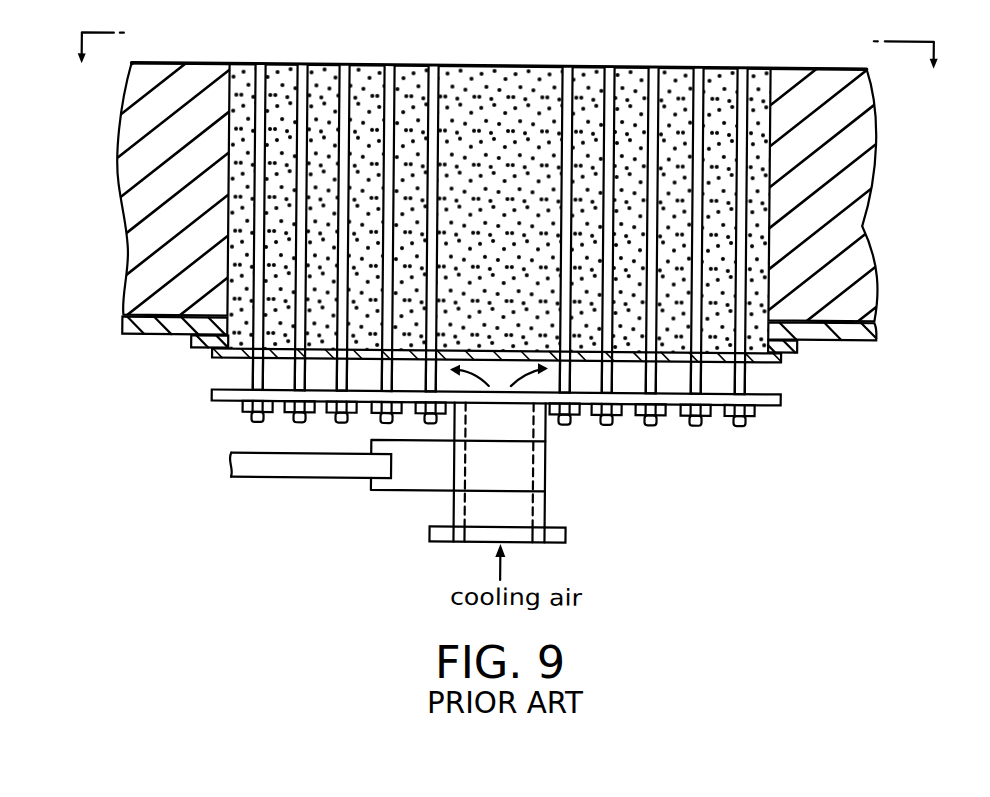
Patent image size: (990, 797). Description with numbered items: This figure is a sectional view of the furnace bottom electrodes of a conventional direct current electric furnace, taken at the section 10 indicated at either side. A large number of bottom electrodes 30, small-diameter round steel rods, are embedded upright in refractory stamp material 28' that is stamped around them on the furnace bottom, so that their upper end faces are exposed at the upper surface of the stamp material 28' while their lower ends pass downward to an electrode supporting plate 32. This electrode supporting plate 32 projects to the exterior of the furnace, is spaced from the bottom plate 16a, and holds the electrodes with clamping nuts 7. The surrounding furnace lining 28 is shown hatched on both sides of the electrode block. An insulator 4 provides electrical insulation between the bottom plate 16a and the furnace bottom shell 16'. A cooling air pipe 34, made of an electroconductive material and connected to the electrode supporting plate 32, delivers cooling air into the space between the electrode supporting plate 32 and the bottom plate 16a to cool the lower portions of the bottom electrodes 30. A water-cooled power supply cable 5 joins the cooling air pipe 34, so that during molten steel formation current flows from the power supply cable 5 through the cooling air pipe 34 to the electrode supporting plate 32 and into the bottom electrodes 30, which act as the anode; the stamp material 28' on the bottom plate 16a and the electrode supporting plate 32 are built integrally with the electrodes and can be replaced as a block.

The section line 10 is at (512, 51).
The refractory block / wall 28 is at (500, 210).
The stamp material 28' is at (658, 188).
The bottom electrodes 30 is at (397, 100).
The furnace bottom shell 16' is at (483, 388).
The insulator 4 is at (193, 350).
The bottom plate 16a is at (214, 357).
The electrode supporting plate 32 is at (783, 397).
The clamping nuts 7 is at (753, 414).
The cooling air pipe 34 is at (455, 500).
The power supply cable 5 is at (283, 480).